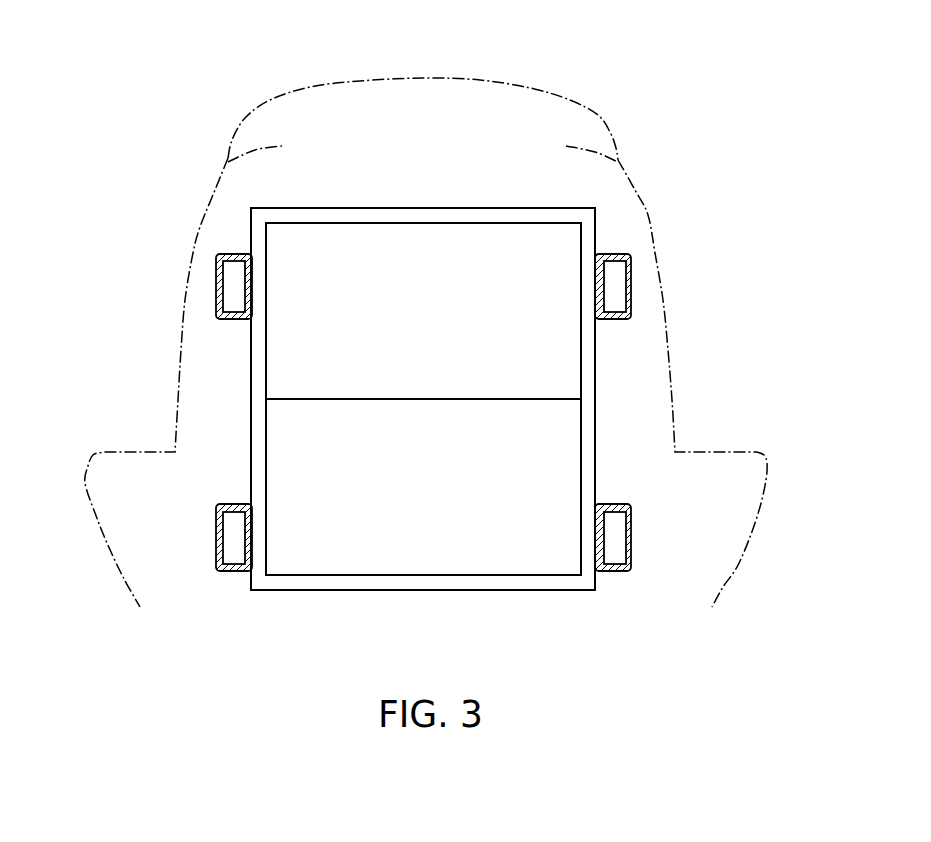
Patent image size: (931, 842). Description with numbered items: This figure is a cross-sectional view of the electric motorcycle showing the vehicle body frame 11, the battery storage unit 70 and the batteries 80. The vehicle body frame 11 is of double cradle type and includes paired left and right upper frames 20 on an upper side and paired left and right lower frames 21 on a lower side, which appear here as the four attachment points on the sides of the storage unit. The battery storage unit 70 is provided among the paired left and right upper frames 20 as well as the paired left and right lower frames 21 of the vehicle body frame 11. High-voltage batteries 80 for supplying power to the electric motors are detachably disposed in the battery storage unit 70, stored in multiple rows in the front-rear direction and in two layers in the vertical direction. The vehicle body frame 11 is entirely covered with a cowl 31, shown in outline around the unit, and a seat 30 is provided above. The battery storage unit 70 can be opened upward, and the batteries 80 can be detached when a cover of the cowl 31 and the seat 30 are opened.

The vehicle body frame 11 is at (437, 416).
The upper frames 20 is at (217, 288).
The lower frames 21 is at (216, 525).
The seat 30 is at (598, 115).
The cowl 31 is at (647, 212).
The battery storage unit 70 is at (466, 207).
The high-voltage batteries 80 is at (266, 361).